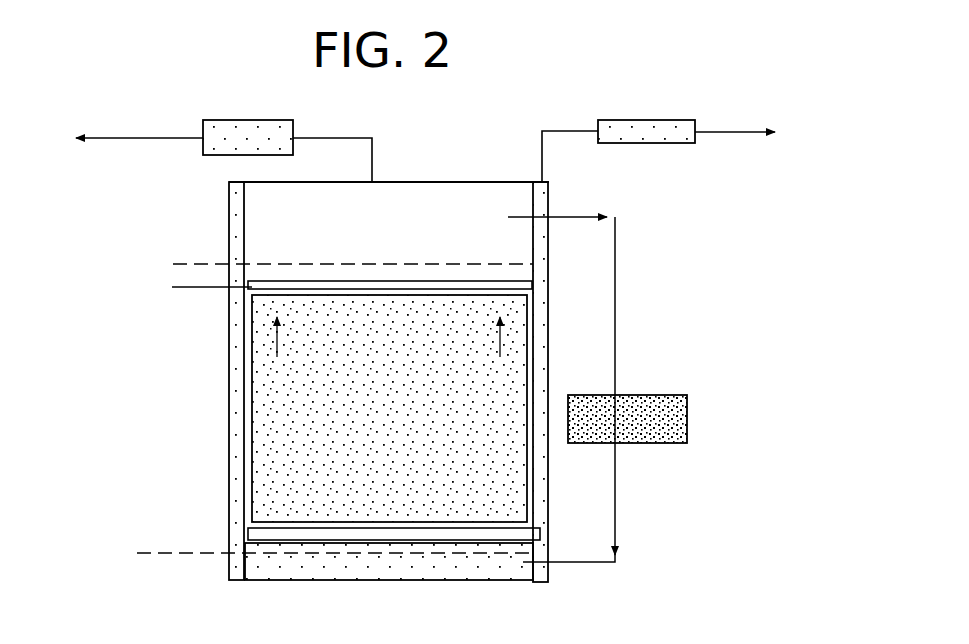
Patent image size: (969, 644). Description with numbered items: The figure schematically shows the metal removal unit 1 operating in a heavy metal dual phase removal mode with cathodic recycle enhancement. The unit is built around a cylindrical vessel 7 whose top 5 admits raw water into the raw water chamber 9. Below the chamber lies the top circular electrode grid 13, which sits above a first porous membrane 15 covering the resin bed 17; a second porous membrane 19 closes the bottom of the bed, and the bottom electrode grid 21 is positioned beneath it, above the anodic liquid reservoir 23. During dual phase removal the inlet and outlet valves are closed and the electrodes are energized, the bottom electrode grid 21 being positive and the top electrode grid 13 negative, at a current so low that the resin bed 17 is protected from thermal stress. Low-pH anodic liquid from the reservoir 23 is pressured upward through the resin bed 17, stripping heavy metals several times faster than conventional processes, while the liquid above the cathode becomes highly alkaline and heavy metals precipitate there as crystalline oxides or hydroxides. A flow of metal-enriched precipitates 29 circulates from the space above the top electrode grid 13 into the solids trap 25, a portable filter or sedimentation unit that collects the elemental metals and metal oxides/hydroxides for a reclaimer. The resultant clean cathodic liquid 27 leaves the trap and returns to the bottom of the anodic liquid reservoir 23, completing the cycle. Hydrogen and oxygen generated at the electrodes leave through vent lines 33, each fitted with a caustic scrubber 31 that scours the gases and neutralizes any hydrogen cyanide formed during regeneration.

The metal removal unit 1 is at (453, 362).
The top 5 is at (422, 182).
The cylindrical vessel 7 is at (228, 368).
The raw water chamber 9 is at (515, 257).
The top circular electrode grid 13 is at (203, 262).
The first porous membrane 15 is at (243, 290).
The resin bed 17 is at (262, 435).
The second porous membrane 19 is at (248, 535).
The bottom electrode grid 21 is at (172, 553).
The anodic liquid reservoir 23 is at (497, 575).
The solids trap 25 is at (687, 415).
The clean cathodic liquid 27 is at (615, 512).
The flow of metal-enriched precipitates 29 is at (615, 285).
The caustic scrubbers 31 is at (236, 155).
The vent lines 33 is at (373, 165).